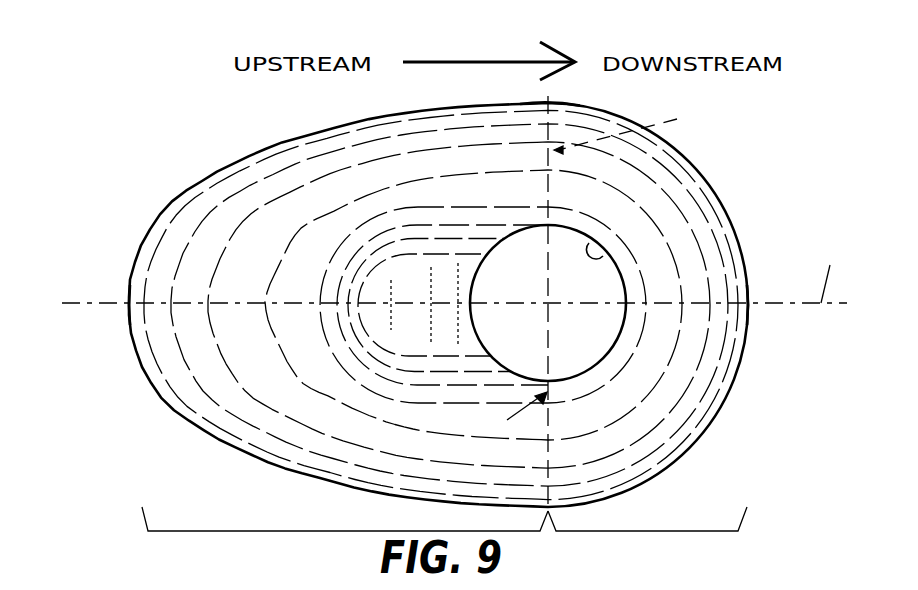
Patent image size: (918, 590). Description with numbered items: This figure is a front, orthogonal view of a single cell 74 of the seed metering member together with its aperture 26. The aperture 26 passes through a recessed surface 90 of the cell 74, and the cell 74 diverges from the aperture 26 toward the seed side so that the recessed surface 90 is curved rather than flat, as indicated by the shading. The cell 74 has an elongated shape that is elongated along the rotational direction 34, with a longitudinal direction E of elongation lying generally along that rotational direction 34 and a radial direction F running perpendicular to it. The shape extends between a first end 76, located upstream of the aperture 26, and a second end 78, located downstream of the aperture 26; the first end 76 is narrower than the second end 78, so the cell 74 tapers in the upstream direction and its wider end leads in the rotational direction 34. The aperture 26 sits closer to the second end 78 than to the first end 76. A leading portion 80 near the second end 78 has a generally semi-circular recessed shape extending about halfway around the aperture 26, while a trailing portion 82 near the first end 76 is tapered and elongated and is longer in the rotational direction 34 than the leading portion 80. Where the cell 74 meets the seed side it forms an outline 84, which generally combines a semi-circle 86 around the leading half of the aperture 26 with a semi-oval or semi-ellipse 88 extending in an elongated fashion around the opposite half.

The aperture 26 is at (610, 258).
The rotational direction 34 is at (443, 62).
The cell 74 is at (243, 343).
The first end 76 is at (127, 305).
The second end 78 is at (750, 304).
The leading portion 80 is at (636, 532).
The trailing portion 82 is at (317, 532).
The outline 84 is at (565, 105).
The semi-circle 86 is at (690, 163).
The semi-oval or semi-ellipse 88 is at (233, 165).
The recessed surface 90 is at (667, 407).
The longitudinal direction E is at (832, 265).
The radial direction F is at (592, 266).